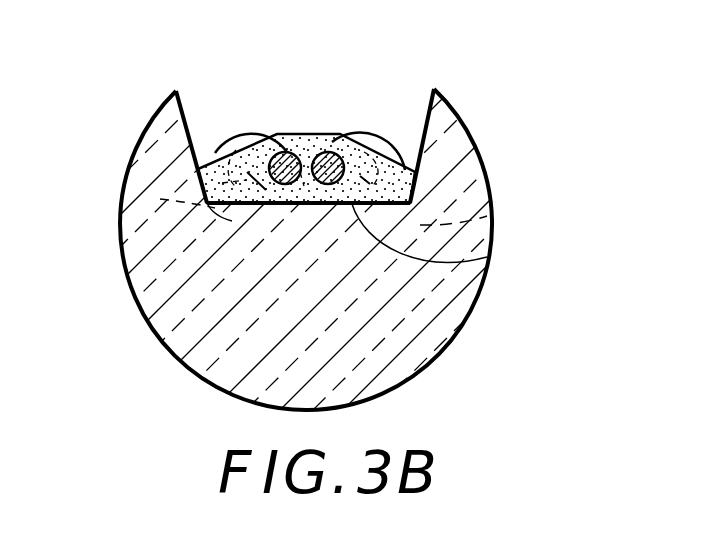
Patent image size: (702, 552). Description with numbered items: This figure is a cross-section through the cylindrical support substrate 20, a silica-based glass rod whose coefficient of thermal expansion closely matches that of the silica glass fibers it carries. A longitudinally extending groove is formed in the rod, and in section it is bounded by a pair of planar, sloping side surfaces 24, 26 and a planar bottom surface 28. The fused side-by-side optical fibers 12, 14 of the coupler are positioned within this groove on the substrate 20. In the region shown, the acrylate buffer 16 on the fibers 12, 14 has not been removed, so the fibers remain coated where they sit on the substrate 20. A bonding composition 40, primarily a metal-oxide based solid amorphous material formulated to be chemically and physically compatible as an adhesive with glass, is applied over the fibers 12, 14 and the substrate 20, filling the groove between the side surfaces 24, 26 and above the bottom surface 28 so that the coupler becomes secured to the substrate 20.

The optical fiber 12 is at (160, 199).
The optical fiber 14 is at (487, 217).
The acrylate buffer 16 is at (255, 131).
The support substrate 20 is at (458, 344).
The sloping side surface 24 is at (180, 101).
The sloping side surface 26 is at (428, 110).
The bottom surface 28 is at (487, 257).
The bonding composition 40 is at (304, 134).